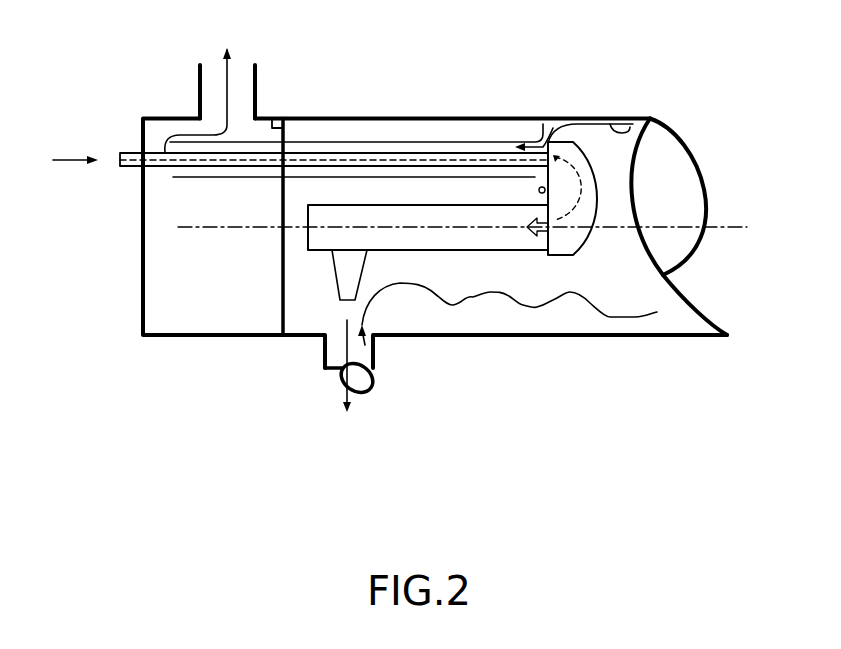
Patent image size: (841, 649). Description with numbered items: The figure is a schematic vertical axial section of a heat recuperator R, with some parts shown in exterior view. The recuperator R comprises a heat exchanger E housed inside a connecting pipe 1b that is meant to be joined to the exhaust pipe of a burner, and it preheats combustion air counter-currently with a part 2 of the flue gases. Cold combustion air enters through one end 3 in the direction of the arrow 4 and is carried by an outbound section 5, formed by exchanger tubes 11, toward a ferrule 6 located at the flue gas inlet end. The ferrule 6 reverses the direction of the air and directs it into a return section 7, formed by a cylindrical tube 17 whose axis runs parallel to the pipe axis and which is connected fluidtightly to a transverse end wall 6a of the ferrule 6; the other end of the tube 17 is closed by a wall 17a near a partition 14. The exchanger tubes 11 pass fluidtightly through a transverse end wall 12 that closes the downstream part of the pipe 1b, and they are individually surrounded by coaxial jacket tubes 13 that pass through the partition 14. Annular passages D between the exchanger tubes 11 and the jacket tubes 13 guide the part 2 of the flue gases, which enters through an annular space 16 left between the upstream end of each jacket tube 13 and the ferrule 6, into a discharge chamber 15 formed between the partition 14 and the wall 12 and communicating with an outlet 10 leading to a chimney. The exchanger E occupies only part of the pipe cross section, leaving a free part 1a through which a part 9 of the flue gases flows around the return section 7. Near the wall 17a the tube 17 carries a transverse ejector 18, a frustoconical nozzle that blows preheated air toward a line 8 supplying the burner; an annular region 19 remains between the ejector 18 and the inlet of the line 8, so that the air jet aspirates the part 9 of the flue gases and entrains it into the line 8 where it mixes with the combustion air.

The free part of the cross section 1a is at (527, 282).
The connecting pipe 1b is at (588, 117).
The part of the flue gases 2 is at (640, 118).
The end 3 is at (133, 152).
The arrow 4 is at (82, 160).
The outbound section 5 is at (316, 148).
The ferrule 6 is at (583, 233).
The transverse end wall 6a is at (545, 188).
The return section 7 is at (452, 240).
The line 8 is at (370, 357).
The part of the combustion flue gases 9 is at (428, 310).
The outlet 10 is at (200, 92).
The exchanger tubes 11 is at (443, 150).
The transverse end wall 12 is at (143, 263).
The jacket tubes 13 is at (510, 142).
The partition 14 is at (274, 118).
The discharge chamber 15 is at (192, 315).
The annular space 16 is at (550, 117).
The cylindrical tube 17 is at (502, 238).
The wall 17a is at (308, 243).
The transverse ejector 18 is at (327, 305).
The annular region 19 is at (322, 347).
The passage D is at (363, 148).
The heat recuperator R is at (394, 130).
The heat exchanger E is at (477, 136).